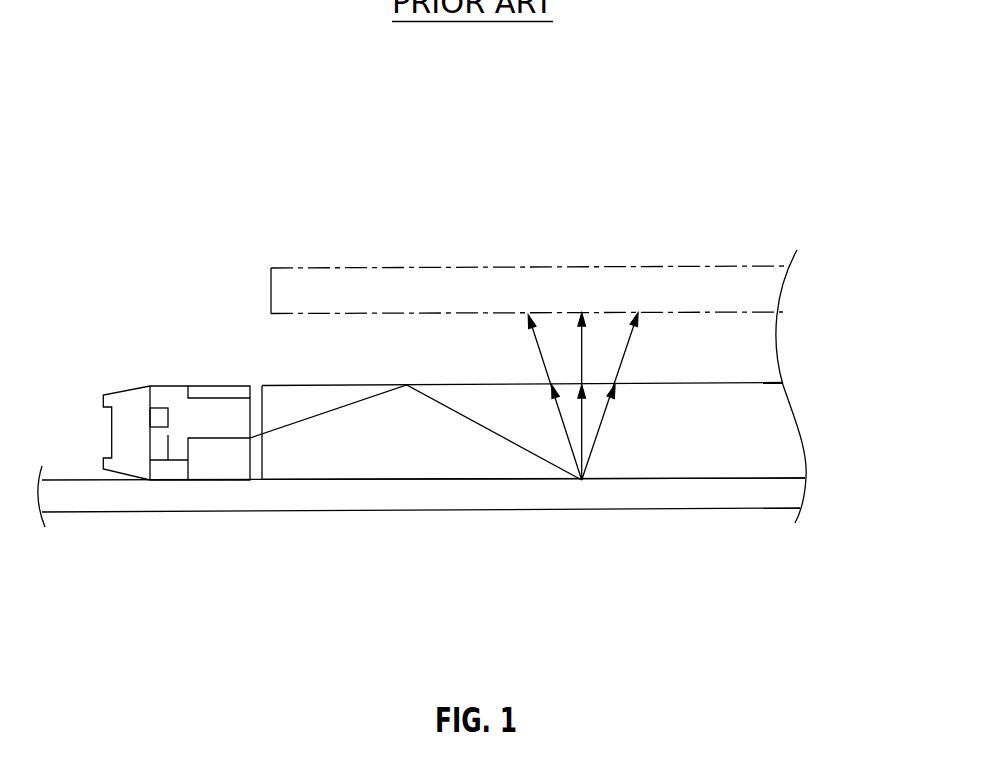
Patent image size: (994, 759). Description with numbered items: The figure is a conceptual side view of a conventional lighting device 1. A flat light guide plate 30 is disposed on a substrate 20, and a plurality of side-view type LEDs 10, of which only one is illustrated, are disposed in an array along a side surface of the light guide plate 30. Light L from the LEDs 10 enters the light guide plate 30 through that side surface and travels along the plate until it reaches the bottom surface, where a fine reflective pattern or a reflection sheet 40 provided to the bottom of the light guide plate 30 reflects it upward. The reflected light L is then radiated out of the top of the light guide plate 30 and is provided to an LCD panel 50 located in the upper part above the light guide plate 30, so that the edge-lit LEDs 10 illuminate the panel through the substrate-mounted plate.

The lighting device 1 is at (252, 188).
The side-view type LED 10 is at (182, 366).
The substrate 20 is at (510, 512).
The light guide plate 30 is at (777, 408).
The reflection sheet 40 is at (735, 478).
The LCD panel 50 is at (568, 267).
The light L is at (300, 420).